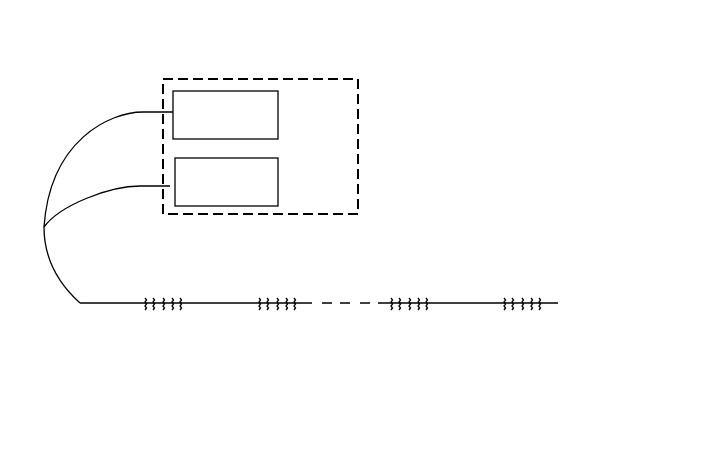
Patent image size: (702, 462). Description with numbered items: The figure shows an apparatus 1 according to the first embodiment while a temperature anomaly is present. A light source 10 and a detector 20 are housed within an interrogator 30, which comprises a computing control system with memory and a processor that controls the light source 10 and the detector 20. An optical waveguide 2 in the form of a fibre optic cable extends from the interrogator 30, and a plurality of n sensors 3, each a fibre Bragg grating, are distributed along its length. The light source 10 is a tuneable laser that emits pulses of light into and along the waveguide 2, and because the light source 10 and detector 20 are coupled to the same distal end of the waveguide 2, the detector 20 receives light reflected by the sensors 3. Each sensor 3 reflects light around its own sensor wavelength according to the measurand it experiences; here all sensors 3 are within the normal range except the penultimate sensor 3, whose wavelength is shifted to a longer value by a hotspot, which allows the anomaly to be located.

The apparatus 1 is at (502, 206).
The optical waveguide 2 is at (127, 303).
The sensor 3 is at (418, 300).
The light source 10 is at (225, 115).
The detector 20 is at (226, 182).
The interrogator 30 is at (335, 160).